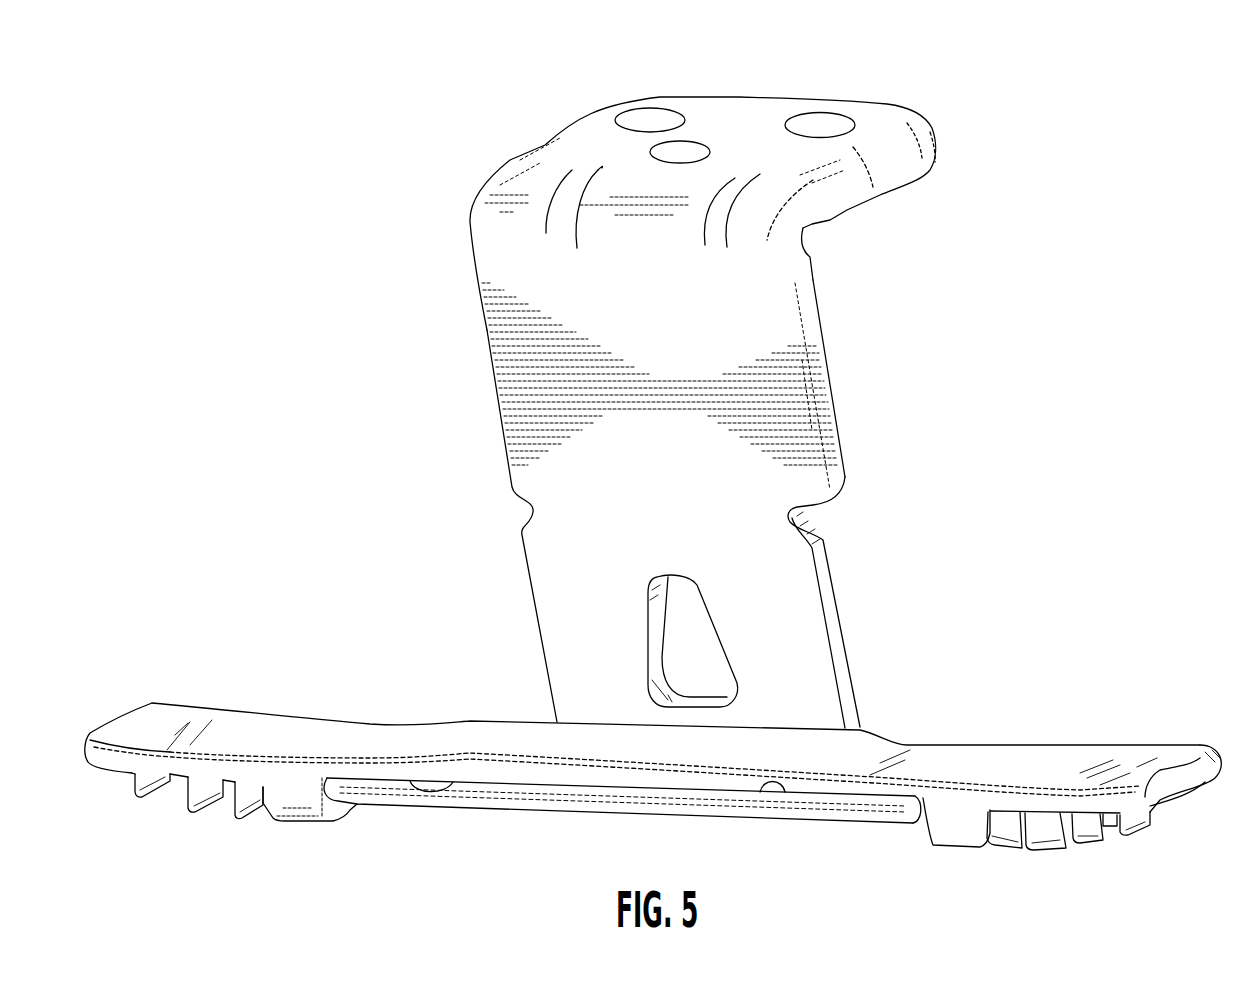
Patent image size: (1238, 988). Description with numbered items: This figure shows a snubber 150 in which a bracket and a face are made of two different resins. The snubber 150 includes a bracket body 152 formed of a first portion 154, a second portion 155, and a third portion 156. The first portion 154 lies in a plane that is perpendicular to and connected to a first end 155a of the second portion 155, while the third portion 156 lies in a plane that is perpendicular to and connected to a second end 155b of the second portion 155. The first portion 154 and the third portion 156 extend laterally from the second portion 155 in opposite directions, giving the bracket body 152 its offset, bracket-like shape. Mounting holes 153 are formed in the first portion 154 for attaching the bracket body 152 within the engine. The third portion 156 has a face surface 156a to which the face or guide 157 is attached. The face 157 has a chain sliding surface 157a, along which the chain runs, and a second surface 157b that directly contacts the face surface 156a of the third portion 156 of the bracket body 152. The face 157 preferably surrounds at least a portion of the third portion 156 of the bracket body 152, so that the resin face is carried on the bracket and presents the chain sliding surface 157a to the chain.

The snubber 150 is at (339, 189).
The bracket body 152 is at (483, 305).
The mounting holes 153 is at (818, 123).
The first portion 154 is at (917, 142).
The second portion 155 is at (753, 345).
The first end 155a is at (750, 223).
The second end 155b is at (867, 728).
The third portion 156 is at (558, 798).
The face surface 156a is at (765, 780).
The face 157 is at (1155, 777).
The chain sliding surface 157a is at (280, 738).
The second surface 157b is at (428, 791).